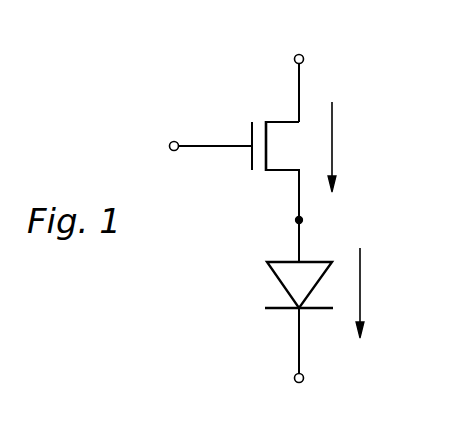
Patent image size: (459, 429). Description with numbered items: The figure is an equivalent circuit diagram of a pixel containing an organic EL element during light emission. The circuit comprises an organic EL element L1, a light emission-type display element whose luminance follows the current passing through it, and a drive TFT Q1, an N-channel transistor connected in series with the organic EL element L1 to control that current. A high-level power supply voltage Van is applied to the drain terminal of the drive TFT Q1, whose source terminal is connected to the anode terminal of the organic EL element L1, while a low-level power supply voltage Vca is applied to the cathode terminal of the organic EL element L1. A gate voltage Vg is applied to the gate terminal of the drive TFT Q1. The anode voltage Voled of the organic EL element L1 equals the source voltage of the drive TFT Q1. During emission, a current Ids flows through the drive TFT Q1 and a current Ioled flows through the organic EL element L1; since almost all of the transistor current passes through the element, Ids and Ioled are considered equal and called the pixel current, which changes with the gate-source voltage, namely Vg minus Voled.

The drive TFT Q1 is at (277, 121).
The organic EL element L1 is at (283, 287).
The high-level power supply voltage Van is at (298, 77).
The gate voltage Vg is at (195, 148).
The anode voltage of the organic EL element Voled is at (270, 238).
The low-level power supply voltage Vca is at (298, 394).
The current flowing through the drive TFT Ids is at (348, 147).
The current flowing through the organic EL element Ioled is at (382, 293).